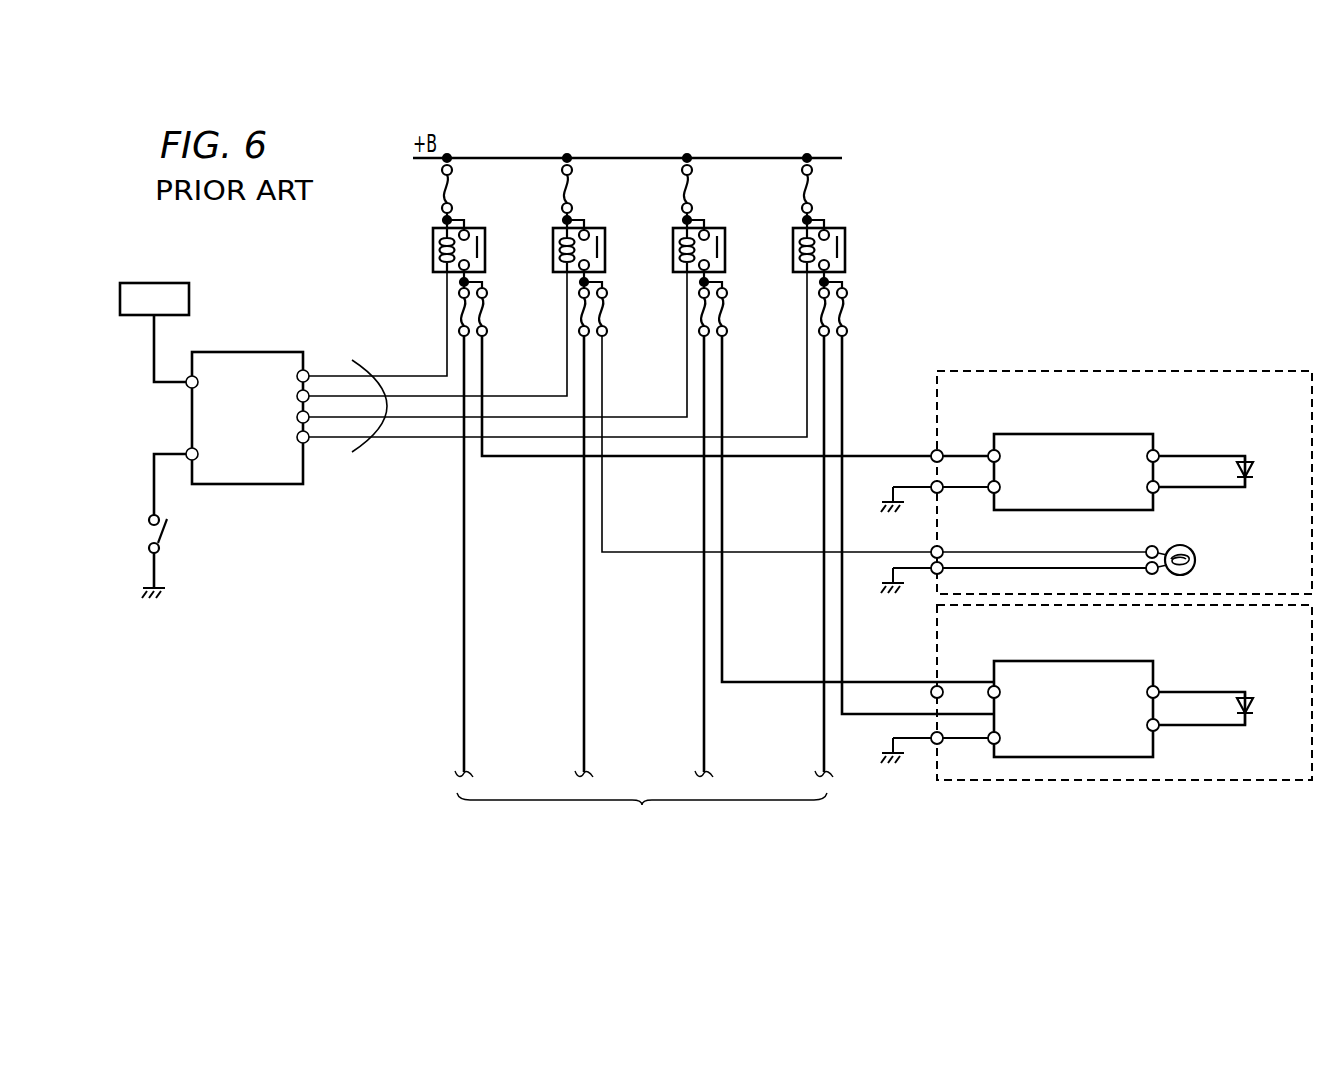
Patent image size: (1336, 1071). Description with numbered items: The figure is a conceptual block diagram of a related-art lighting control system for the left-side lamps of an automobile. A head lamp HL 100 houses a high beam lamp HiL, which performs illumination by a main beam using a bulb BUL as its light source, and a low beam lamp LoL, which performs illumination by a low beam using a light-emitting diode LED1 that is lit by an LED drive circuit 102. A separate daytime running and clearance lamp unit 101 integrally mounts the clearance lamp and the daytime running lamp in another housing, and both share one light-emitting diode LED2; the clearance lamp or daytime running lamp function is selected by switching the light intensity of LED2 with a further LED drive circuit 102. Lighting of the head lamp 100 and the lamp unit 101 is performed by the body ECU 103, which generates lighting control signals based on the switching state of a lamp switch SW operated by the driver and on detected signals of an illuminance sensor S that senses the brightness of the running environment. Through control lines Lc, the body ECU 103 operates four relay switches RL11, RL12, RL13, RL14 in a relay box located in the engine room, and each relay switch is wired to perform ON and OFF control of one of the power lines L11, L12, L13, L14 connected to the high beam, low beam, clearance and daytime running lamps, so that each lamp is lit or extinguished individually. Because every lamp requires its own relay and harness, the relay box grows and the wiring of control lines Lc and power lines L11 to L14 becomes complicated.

The head lamp (HL) 100 is at (1255, 369).
The DRL/CLL 101 is at (1189, 785).
The LED drive circuit 102 is at (1040, 434).
The body ECU (B-ECU) 103 is at (274, 352).
The illuminance sensor S is at (170, 288).
The lamp switch SW is at (166, 538).
The control lines Lc is at (373, 358).
The relay switch RL11 is at (431, 245).
The relay switch RL12 is at (550, 245).
The relay switch RL13 is at (670, 245).
The relay switch RL14 is at (790, 245).
The power line L11 is at (863, 455).
The power line L12 is at (858, 556).
The power line L13 is at (865, 682).
The power line L14 is at (868, 716).
The low beam lamp LoL is at (1190, 445).
The high beam lamp HiL is at (1144, 549).
The bulb BUL is at (1202, 554).
The light-emitting diode LED1 is at (1286, 465).
The light-emitting diode LED2 is at (1286, 706).